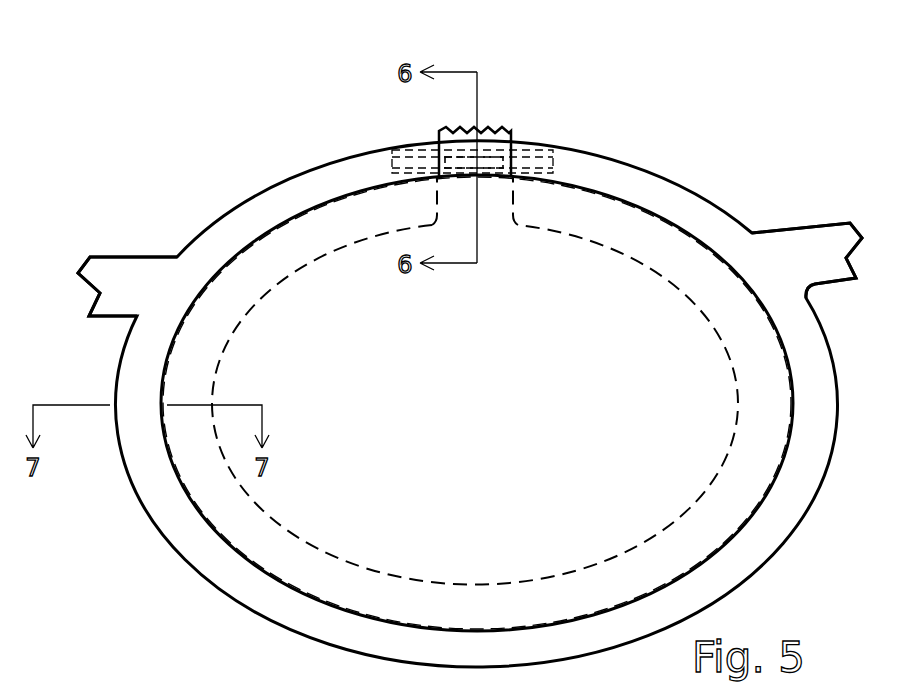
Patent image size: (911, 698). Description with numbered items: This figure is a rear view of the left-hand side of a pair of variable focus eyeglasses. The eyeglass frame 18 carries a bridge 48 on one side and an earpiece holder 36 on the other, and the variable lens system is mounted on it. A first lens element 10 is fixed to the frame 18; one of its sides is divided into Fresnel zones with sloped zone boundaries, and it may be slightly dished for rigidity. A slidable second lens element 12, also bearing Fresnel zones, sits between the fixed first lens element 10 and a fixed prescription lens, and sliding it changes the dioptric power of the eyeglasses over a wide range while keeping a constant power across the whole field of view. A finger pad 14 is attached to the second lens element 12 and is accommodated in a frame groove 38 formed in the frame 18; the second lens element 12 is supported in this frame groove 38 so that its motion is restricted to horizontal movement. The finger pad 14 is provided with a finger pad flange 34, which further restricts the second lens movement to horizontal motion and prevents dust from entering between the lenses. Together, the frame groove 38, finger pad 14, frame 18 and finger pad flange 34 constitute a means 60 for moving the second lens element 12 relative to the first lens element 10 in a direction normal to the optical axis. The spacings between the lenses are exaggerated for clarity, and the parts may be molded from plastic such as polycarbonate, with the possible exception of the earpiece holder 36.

The first lens element 10 is at (745, 528).
The second lens element 12 is at (290, 537).
The finger pad 14 is at (496, 130).
The eyeglass frame 18 is at (303, 171).
The finger pad flange 34 is at (440, 160).
The earpiece holder 36 is at (103, 255).
The frame groove 38 is at (535, 153).
The bridge 48 is at (818, 225).
The means for moving the second lens element 60 is at (418, 125).